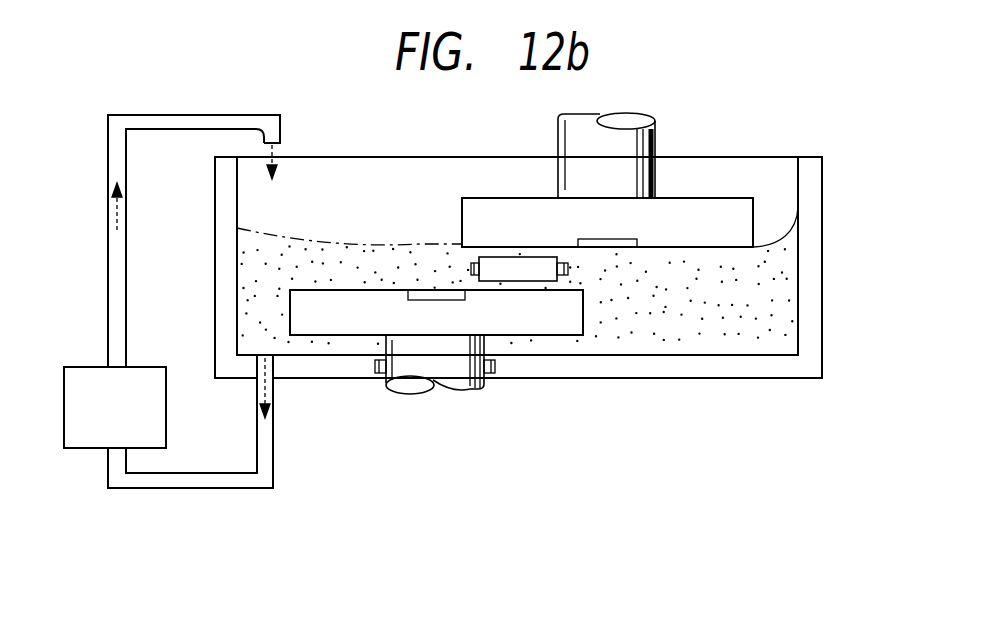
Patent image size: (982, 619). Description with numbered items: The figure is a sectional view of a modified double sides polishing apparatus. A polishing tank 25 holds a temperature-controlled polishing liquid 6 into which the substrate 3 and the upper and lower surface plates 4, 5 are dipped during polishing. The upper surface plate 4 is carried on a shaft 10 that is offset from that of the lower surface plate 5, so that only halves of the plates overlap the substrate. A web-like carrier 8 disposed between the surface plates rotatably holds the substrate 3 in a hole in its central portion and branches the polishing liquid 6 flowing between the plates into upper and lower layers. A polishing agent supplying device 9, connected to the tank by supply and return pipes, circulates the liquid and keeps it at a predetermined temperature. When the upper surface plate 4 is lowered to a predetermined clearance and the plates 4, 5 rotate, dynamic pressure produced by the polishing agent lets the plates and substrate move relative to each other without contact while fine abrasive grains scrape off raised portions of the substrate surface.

The substrate 3 is at (545, 272).
The upper surface plate 4 is at (727, 208).
The lower surface plate 5 is at (322, 327).
The polishing liquid 6 is at (757, 335).
The carrier 8 is at (564, 277).
The polishing agent supplying device 9 is at (83, 450).
The drive shaft 10 is at (657, 137).
The polishing tank 25 is at (807, 170).